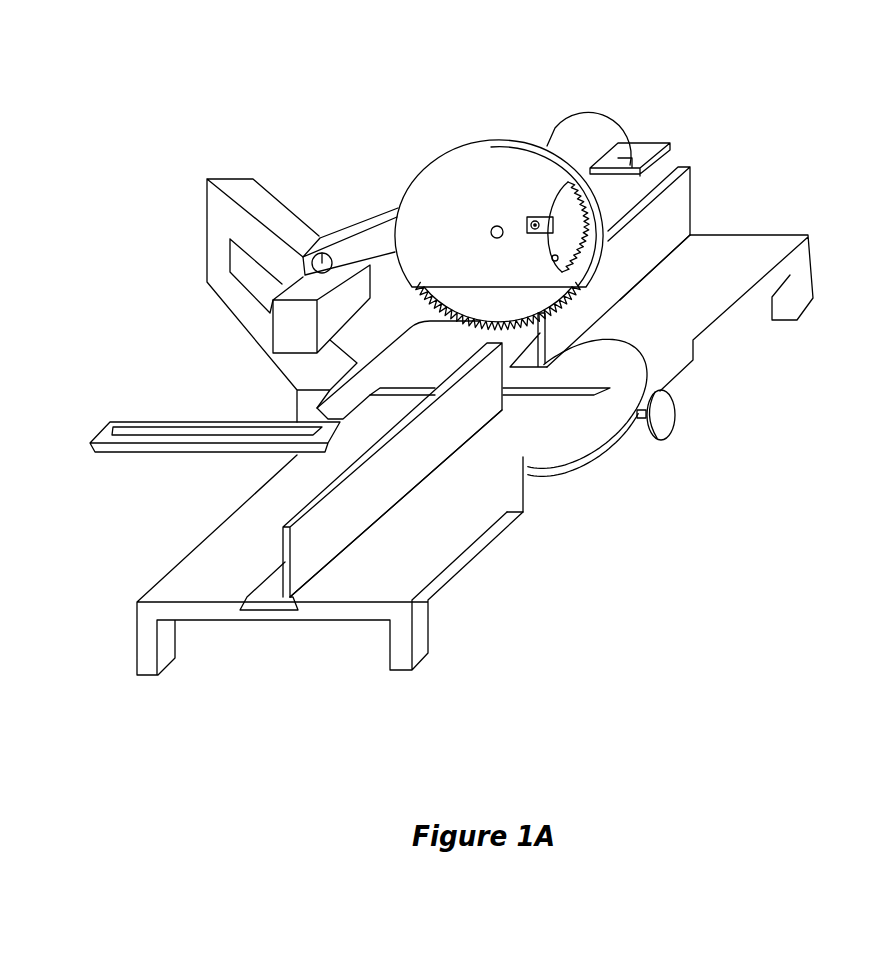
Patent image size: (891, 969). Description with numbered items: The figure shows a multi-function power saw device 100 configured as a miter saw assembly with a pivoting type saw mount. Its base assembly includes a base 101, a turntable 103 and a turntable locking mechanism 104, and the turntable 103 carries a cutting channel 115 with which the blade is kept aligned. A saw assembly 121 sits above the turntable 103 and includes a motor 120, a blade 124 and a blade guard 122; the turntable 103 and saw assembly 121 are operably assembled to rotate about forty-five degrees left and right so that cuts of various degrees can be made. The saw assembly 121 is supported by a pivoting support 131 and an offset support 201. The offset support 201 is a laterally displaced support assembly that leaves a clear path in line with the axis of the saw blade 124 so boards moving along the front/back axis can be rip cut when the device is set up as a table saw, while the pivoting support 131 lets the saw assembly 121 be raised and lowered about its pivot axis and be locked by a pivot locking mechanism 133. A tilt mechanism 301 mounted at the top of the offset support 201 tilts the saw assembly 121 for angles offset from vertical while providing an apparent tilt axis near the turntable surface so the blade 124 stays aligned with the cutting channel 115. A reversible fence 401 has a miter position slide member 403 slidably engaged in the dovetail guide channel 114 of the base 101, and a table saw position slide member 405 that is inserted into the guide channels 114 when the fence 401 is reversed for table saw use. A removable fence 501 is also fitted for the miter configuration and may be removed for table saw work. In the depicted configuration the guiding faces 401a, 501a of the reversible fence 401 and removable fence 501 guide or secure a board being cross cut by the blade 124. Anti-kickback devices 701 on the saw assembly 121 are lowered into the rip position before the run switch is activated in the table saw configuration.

The multi-function power saw device 100 is at (805, 564).
The base 101 is at (778, 233).
The turntable 103 is at (577, 463).
The turntable locking mechanism 104 is at (675, 433).
The guide channel 114 is at (548, 368).
The cutting channel 115 is at (402, 385).
The motor 120 is at (623, 122).
The saw assembly 121 is at (442, 140).
The blade guard 122 is at (477, 153).
The blade 124 is at (477, 297).
The pivoting support 131 is at (340, 222).
The pivot locking mechanism 133 is at (320, 252).
The offset support 201 is at (205, 243).
The tilt mechanism 301 is at (283, 341).
The reversible fence 401 is at (385, 483).
The guiding face 401a is at (340, 520).
The miter position slide member 403 is at (258, 600).
The table saw position slide member 405 is at (142, 443).
The removable fence 501 is at (695, 205).
The guiding face 501a is at (645, 242).
The anti-kickback devices 701 is at (545, 218).